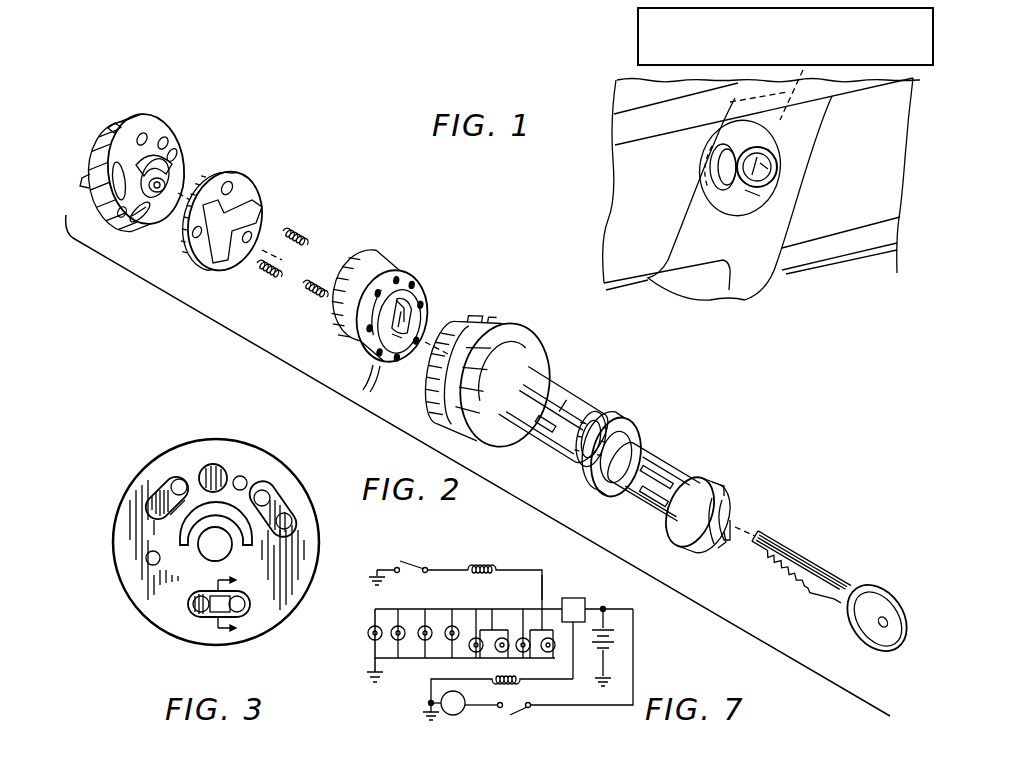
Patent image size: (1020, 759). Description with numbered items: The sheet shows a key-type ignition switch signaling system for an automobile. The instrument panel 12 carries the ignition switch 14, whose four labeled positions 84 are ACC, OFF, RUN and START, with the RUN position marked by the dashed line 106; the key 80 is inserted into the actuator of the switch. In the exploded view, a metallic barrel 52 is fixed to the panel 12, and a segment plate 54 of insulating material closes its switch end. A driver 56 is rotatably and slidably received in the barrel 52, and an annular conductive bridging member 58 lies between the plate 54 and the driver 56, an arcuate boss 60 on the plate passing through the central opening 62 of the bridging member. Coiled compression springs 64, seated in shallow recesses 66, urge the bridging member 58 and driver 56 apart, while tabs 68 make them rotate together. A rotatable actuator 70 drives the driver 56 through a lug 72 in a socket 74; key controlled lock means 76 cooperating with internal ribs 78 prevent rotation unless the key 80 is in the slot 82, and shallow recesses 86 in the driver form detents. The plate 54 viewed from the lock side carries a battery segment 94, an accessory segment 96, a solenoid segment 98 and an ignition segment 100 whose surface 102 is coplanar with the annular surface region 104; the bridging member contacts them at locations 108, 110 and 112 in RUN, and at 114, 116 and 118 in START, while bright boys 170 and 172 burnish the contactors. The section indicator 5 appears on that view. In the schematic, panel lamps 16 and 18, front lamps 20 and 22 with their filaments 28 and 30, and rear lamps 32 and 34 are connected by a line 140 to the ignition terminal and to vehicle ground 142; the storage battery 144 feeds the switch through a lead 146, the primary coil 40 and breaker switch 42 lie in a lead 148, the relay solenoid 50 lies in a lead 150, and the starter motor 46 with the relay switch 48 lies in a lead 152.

In FIG. 1, the instrument panel 12 is at (630, 212).
In FIG. 1, the ignition switch 14 is at (791, 179).
In FIG. 2, the ignition switch 14 is at (610, 380).
In FIG. 7, the ignition switch 14 is at (584, 598).
In FIG. 7, the electrical panel lamp 16 is at (425, 625).
In FIG. 7, the electrical panel lamp 18 is at (452, 625).
In FIG. 7, the electrical lamp 20 is at (370, 640).
In FIG. 7, the electrical lamp 22 is at (398, 658).
In FIG. 7, the filament 28 is at (476, 637).
In FIG. 7, the filament 30 is at (502, 637).
In FIG. 7, the rear signal lamp and housing combination 32 is at (523, 637).
In FIG. 7, the rear signal lamp and housing combination 34 is at (548, 637).
In FIG. 7, the primary coil 40 is at (488, 565).
In FIG. 7, the breaker switch 42 is at (416, 560).
In FIG. 7, the starter motor 46 is at (456, 714).
In FIG. 7, the relay switch 48 is at (520, 714).
In FIG. 7, the relay solenoid 50 is at (490, 677).
In FIG. 2, the barrel 52 is at (520, 350).
In FIG. 2, the segment plate 54 is at (178, 152).
In FIG. 3, the segment plate 54 is at (190, 470).
In FIG. 2, the driver 56 is at (395, 275).
In FIG. 2, the bridging member 58 is at (252, 196).
In FIG. 2, the arcuate boss 60 is at (152, 170).
In FIG. 3, the arcuate boss 60 is at (182, 540).
In FIG. 2, the central opening 62 is at (235, 195).
In FIG. 2, the coiled compression springs 64 is at (318, 292).
In FIG. 2, the shallow recess 66 is at (200, 248).
In FIG. 2, the tabs 68 is at (258, 222).
In FIG. 2, the actuator 70 is at (657, 457).
In FIG. 2, the lug 72 is at (632, 437).
In FIG. 2, the socket 74 is at (408, 298).
In FIG. 2, the key controlled lock means 76 is at (694, 480).
In FIG. 2, the internal ribs 78 is at (582, 466).
In FIG. 1, the key 80 is at (755, 182).
In FIG. 2, the key 80 is at (835, 578).
In FIG. 2, the slot 82 is at (712, 548).
In FIG. 1, the labeled positions 84 is at (649, 53).
In FIG. 2, the shallow recesses 86 is at (378, 388).
In FIG. 2, the battery segment 94 is at (172, 169).
In FIG. 3, the battery segment 94 is at (290, 500).
In FIG. 2, the accessory segment 96 is at (106, 168).
In FIG. 3, the accessory segment 96 is at (152, 492).
In FIG. 2, the solenoid segment 98 is at (142, 133).
In FIG. 3, the solenoid segment 98 is at (215, 464).
In FIG. 2, the ignition segment 100 is at (138, 214).
In FIG. 3, the ignition segment 100 is at (205, 616).
In FIG. 2, the surface 102 is at (148, 216).
In FIG. 3, the surface 102 is at (216, 617).
In FIG. 3, the annular surface region 104 is at (158, 598).
In FIG. 1, the dashed line 106 is at (739, 104).
In FIG. 3, the contact location 108 is at (264, 638).
In FIG. 3, the contact location 110 is at (170, 472).
In FIG. 3, the contact location 112 is at (283, 490).
In FIG. 3, the contact location 114 is at (190, 620).
In FIG. 3, the contact location 116 is at (230, 480).
In FIG. 3, the contact location 118 is at (318, 510).
In FIG. 7, the line 140 is at (375, 609).
In FIG. 7, the vehicle ground 142 is at (375, 572).
In FIG. 7, the storage battery 144 is at (614, 638).
In FIG. 7, the lead 146 is at (603, 608).
In FIG. 7, the lead 148 is at (522, 568).
In FIG. 7, the lead 150 is at (573, 680).
In FIG. 7, the lead 152 is at (580, 706).
In FIG. 2, the bright boy 170 is at (123, 218).
In FIG. 3, the bright boy 170 is at (147, 562).
In FIG. 2, the bright boy 172 is at (167, 143).
In FIG. 3, the bright boy 172 is at (242, 482).
In FIG. 3, the section line 5 is at (235, 602).